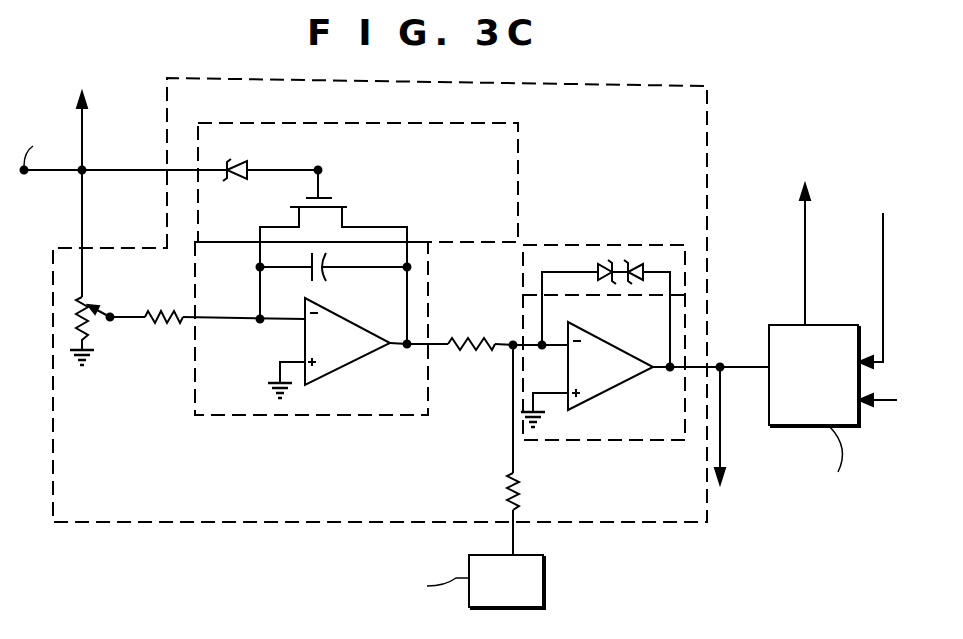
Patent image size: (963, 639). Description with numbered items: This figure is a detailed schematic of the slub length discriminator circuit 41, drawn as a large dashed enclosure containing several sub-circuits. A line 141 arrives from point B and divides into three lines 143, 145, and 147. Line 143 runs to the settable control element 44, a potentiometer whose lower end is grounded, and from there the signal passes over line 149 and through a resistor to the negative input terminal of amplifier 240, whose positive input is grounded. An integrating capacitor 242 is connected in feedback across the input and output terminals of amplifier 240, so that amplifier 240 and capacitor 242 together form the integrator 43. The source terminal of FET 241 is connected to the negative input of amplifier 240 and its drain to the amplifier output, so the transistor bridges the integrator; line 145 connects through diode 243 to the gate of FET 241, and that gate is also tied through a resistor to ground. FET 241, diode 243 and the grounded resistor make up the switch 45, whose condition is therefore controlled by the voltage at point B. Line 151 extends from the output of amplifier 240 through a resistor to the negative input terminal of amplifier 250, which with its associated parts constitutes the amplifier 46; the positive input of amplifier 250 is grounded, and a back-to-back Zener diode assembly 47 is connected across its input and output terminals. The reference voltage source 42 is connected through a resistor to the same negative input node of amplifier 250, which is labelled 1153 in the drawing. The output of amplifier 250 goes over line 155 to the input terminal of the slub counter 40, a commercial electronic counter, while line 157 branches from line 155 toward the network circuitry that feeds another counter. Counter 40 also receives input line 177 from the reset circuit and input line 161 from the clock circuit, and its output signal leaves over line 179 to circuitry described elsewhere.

The slub length discriminator circuit 41 is at (709, 116).
The switch 45 is at (417, 123).
The integrator 43 is at (363, 415).
The amplifier 46 is at (625, 440).
The back-to-back Zener diode circuit 47 is at (618, 245).
The line 141 is at (40, 173).
The line 145 is at (90, 170).
The line 147 is at (82, 123).
The line 143 is at (82, 222).
The settable control element 44 is at (102, 327).
The line 149 is at (134, 314).
The diode 243 is at (243, 166).
The FET 241 is at (352, 199).
The integrating capacitor 242 is at (326, 276).
The amplifier 240 is at (355, 350).
The line 151 is at (445, 338).
The node conductor 1153 is at (527, 348).
The amplifier 250 is at (617, 376).
The line 155 is at (697, 367).
The line 157 is at (720, 443).
The slub counter 40 is at (831, 380).
The reference voltage source 42 is at (518, 592).
The line 179 is at (808, 216).
The input line 177 is at (883, 262).
The input line 161 is at (882, 401).